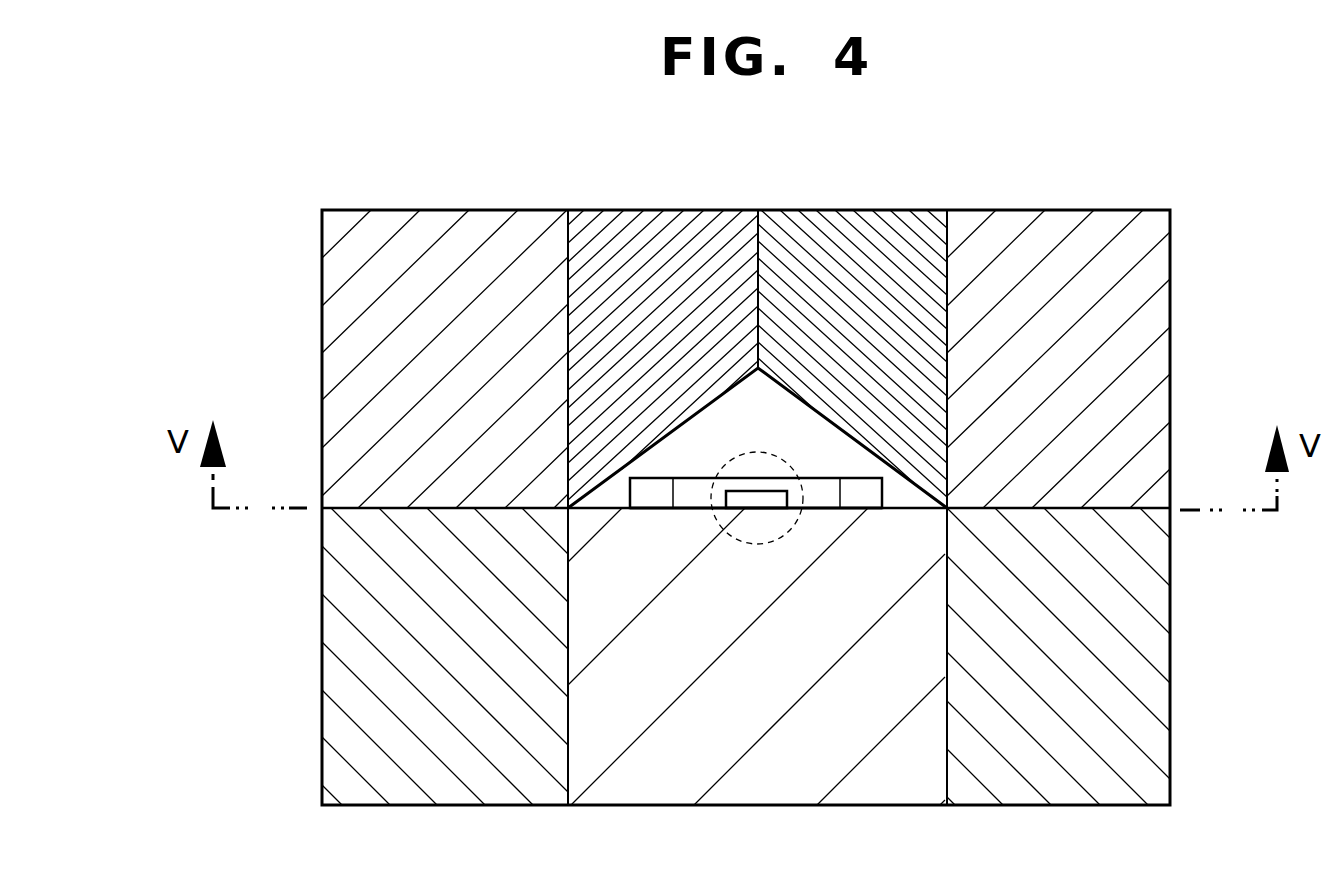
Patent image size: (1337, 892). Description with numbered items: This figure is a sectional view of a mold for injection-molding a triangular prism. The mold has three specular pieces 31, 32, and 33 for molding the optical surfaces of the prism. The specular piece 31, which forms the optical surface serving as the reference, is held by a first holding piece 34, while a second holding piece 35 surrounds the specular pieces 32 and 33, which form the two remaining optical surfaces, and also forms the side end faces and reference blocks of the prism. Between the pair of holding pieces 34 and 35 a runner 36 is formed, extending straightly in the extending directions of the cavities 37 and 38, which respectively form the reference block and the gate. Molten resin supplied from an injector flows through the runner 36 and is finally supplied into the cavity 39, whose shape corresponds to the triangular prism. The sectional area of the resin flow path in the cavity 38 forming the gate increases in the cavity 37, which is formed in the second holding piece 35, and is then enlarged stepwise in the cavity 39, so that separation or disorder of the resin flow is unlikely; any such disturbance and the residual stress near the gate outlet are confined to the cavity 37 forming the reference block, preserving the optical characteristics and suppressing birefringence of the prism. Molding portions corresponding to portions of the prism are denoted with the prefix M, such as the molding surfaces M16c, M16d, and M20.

The specular piece 31 is at (767, 785).
The specular piece 32 is at (661, 210).
The specular piece 33 is at (852, 210).
The first holding piece 34 is at (1152, 665).
The second holding piece 35 is at (1153, 373).
The runner 36 is at (730, 540).
The cavity 37 is at (700, 483).
The cavity 38 is at (778, 502).
The cavity 39 is at (838, 452).
The molding surface M16c is at (648, 506).
The molding surface M16d is at (860, 506).
The molding surface M20 is at (783, 478).